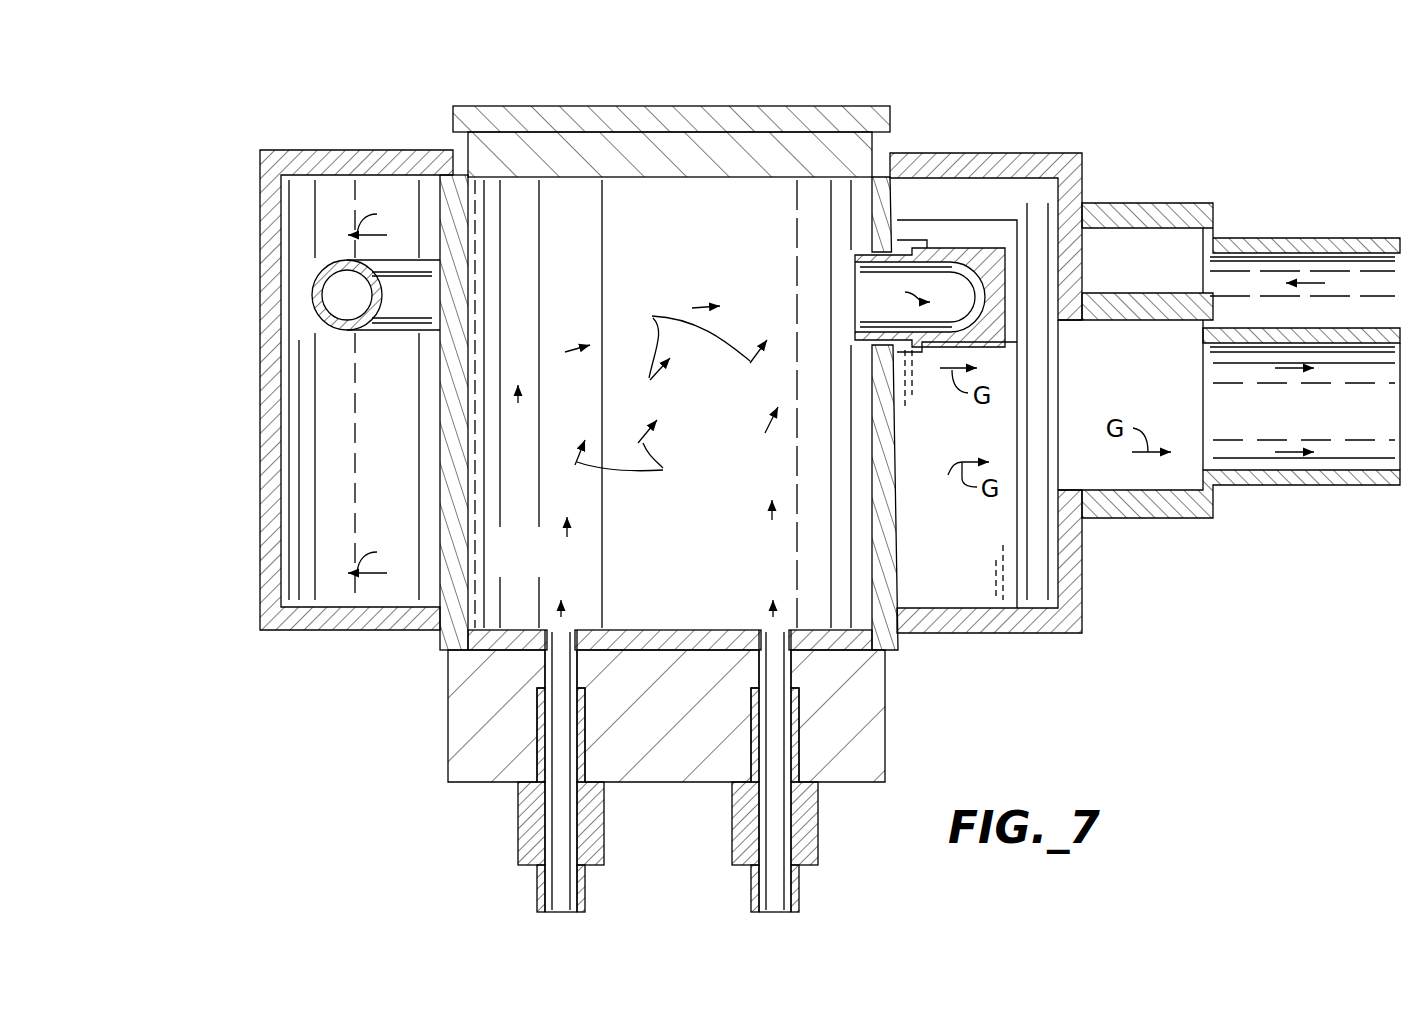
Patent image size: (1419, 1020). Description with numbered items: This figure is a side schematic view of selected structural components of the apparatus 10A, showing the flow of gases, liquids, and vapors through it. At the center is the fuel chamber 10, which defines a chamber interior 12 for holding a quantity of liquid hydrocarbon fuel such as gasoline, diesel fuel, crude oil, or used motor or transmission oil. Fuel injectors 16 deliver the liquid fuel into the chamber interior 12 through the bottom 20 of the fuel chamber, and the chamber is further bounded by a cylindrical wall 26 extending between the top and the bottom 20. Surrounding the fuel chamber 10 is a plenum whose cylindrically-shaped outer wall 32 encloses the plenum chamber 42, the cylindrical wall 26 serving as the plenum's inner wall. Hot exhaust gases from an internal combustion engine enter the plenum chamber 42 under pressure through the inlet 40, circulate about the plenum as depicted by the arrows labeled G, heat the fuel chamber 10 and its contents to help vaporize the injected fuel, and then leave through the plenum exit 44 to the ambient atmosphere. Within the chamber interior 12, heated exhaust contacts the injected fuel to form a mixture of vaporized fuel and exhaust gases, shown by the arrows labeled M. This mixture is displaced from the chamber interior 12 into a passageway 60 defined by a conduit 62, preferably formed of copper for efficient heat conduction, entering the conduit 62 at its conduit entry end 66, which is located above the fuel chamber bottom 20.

The apparatus 10A is at (657, 96).
The outer wall 32 is at (262, 280).
The plenum chamber 42 is at (377, 465).
The conduit 62 is at (413, 335).
The chamber interior 12 is at (660, 285).
The passageway 60 is at (867, 282).
The conduit entry end 66 is at (853, 318).
The cylindrical wall 26 is at (472, 535).
The bottom 20 is at (660, 630).
The fuel injectors 16 is at (732, 830).
The fuel chamber 10 is at (900, 458).
The inlet 40 is at (1253, 263).
The plenum exit 44 is at (1240, 462).